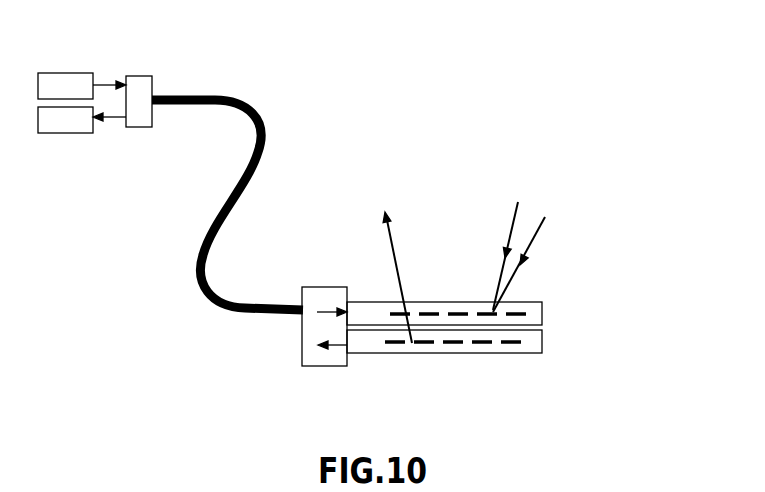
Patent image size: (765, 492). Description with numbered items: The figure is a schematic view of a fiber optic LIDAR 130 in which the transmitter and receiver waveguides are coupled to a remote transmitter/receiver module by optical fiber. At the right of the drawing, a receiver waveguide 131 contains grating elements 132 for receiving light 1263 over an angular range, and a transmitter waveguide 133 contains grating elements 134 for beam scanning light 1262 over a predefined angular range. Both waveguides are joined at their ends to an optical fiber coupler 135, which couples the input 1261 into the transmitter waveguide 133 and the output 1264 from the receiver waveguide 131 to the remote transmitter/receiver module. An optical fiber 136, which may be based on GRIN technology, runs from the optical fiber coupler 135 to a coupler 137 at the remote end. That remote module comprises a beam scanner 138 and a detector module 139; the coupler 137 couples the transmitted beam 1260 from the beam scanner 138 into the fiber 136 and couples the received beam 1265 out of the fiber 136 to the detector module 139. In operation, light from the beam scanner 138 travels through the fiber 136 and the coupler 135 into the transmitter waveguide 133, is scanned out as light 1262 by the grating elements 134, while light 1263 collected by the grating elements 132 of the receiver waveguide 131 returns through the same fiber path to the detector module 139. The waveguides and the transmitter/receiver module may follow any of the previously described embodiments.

The fiber optic LIDAR 130 is at (562, 65).
The receiver waveguide 131 is at (545, 307).
The grating elements 132 is at (493, 313).
The transmitter waveguide 133 is at (545, 343).
The grating elements 134 is at (410, 350).
The optical fiber coupler 135 is at (302, 327).
The optical fiber 136 is at (268, 138).
The coupler 137 is at (152, 90).
The beam scanner module 138 is at (40, 72).
The detector module 139 is at (53, 133).
The transmitted beam 1260 is at (103, 80).
The input 1261 is at (368, 263).
The beam scanning light 1262 is at (390, 230).
The received light 1263 is at (530, 210).
The output 1264 is at (335, 350).
The received beam 1265 is at (120, 120).